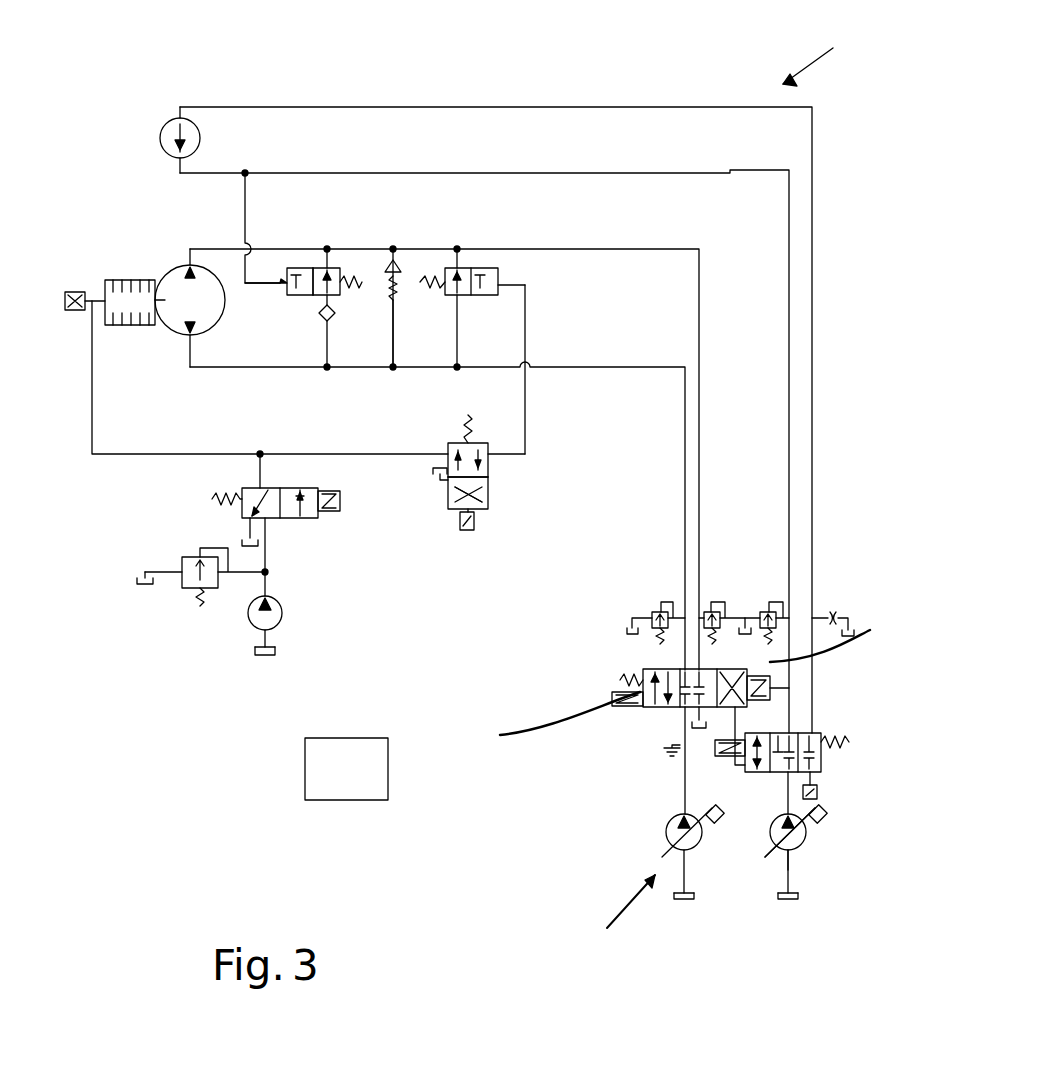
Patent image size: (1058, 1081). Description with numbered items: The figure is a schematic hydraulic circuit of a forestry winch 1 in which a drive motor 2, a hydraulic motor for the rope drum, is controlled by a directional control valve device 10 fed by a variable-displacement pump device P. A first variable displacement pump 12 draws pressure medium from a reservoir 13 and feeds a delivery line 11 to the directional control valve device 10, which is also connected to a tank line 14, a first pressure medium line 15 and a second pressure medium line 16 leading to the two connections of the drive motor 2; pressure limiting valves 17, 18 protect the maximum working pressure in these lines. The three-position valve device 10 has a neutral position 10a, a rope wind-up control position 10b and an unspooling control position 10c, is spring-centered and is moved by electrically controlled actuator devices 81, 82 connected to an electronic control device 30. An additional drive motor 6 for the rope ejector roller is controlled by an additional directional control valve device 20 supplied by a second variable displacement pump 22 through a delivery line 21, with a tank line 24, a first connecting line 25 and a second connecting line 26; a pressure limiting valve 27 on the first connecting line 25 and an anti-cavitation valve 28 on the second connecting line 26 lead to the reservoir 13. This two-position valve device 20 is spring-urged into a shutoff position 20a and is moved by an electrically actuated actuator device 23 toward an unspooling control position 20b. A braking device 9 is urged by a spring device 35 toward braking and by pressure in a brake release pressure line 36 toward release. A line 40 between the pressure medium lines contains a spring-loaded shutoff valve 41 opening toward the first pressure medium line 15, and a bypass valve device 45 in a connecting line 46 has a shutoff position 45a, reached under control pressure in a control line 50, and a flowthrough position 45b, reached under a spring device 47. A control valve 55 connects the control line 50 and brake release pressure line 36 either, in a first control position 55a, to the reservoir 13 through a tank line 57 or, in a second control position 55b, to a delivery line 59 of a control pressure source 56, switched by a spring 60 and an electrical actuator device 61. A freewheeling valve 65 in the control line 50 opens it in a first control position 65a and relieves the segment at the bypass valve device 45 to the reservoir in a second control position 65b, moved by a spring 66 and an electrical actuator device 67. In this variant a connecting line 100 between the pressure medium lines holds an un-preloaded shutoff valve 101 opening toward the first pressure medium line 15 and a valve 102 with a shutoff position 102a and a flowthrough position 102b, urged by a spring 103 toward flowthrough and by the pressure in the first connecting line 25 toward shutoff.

The forestry winch 1 is at (817, 64).
The drive motor 2 is at (185, 290).
The additional drive motor 6 is at (158, 140).
The braking device 9 is at (128, 280).
The directional control valve device 10 is at (625, 710).
The neutral position 10a is at (645, 668).
The rope wind-up control position 10b is at (594, 703).
The unspooling control position 10c is at (775, 690).
The delivery line 11 is at (668, 755).
The first variable displacement pump 12 is at (665, 838).
The reservoir 13 is at (245, 542).
The tank line 14 is at (758, 734).
The first pressure medium line 15 is at (655, 365).
The second pressure medium line 16 is at (640, 249).
The pressure limiting valve 17 is at (650, 615).
The pressure limiting valve 18 is at (712, 606).
The additional directional control valve device 20 is at (862, 745).
The shutoff position 20a is at (858, 730).
The unspooling control position 20b is at (752, 855).
The delivery line 21 is at (770, 835).
The second variable displacement pump 22 is at (805, 840).
The actuator of second directional valve 23 is at (826, 738).
The tank line 24 is at (820, 792).
The first connecting line 25 is at (630, 168).
The second connecting line 26 is at (730, 105).
The pressure limiting valve 27 is at (768, 606).
The anti-cavitation valve 28 is at (850, 610).
The electronic control device 30 is at (340, 760).
The spring device 35 is at (70, 290).
The brake release pressure line 36 is at (92, 375).
The line 40 is at (400, 262).
The spring-loaded shutoff valve 41 is at (385, 300).
The bypass valve device 45 is at (485, 270).
The shutoff position 45a is at (500, 275).
The flowthrough position 45b is at (466, 270).
The connecting line 46 is at (460, 320).
The spring device 47 is at (425, 295).
The control line 50 is at (530, 325).
The control valve 55 is at (300, 518).
The first control position 55a is at (265, 492).
The second control position 55b is at (270, 520).
The control pressure source 56 is at (280, 615).
The tank line 57 is at (250, 522).
The delivery line 59 is at (255, 605).
The spring 60 is at (225, 499).
The electrical actuator device 61 is at (335, 509).
The freewheeling valve 65 is at (492, 522).
The first control position 65a is at (490, 477).
The second control position 65b is at (490, 492).
The spring 66 is at (468, 432).
The electrical actuator device 67 is at (468, 532).
The actuator device 81 is at (551, 724).
The actuator device 82 is at (839, 631).
The connecting line 100 is at (355, 265).
The un-preloaded shutoff valve 101 is at (322, 322).
The valve 102 is at (300, 262).
The shutoff position 102a is at (290, 296).
The flowthrough position 102b is at (330, 265).
The spring 103 is at (368, 262).
The variable-displacement pump device P is at (620, 942).